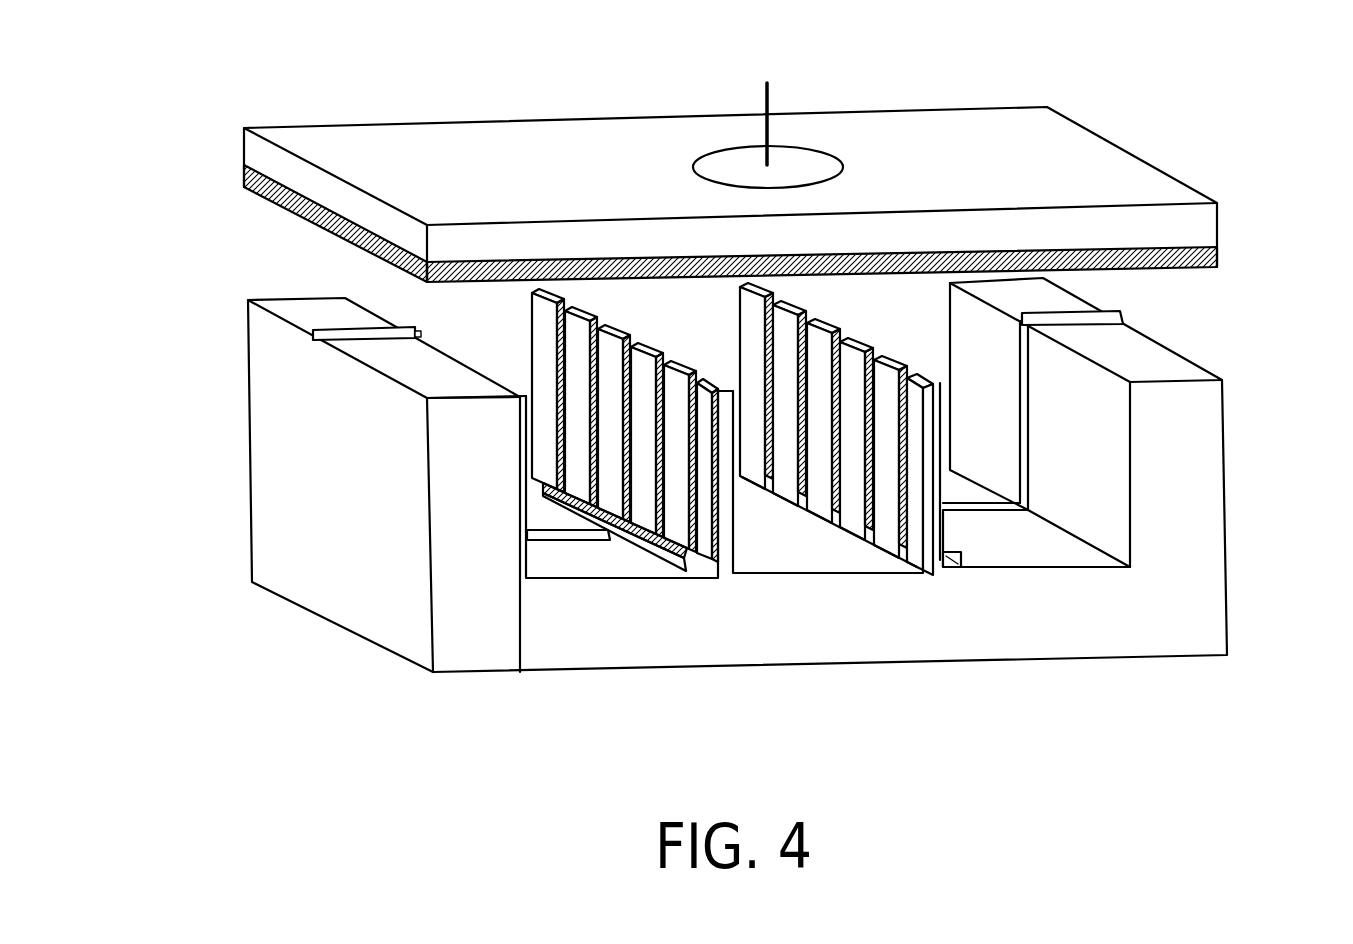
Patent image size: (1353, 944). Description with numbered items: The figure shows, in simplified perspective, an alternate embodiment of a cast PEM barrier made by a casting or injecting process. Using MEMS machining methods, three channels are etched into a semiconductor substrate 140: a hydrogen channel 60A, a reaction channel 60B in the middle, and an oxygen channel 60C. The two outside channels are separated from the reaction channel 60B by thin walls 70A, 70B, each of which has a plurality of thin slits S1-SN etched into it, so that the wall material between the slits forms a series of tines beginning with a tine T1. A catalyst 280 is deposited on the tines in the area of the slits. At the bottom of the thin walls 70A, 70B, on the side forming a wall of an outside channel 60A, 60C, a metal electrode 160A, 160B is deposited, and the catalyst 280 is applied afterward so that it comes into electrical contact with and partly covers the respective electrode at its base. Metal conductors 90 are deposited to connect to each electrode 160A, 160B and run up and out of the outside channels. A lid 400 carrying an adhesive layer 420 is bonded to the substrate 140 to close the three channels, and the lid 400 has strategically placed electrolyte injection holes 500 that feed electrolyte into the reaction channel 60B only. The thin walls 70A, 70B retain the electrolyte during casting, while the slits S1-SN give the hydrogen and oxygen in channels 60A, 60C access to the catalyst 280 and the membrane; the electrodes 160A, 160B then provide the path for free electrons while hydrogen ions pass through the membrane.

The lid 400 is at (793, 174).
The adhesive layer 420 is at (1217, 258).
The electrolyte injection ports or holes 500 is at (772, 90).
The metal conductors 90 is at (345, 340).
The catalyst 280 is at (607, 327).
The tine T1 is at (678, 528).
The thin slits S1-SN is at (702, 480).
The metal electrode 160A is at (574, 503).
The metal electrode 160B is at (933, 515).
The hydrogen channel 60A is at (603, 563).
The reaction channel 60B is at (780, 563).
The oxygen channel 60C is at (1060, 558).
The thin wall 70A is at (726, 537).
The thin wall 70B is at (963, 567).
The semiconductor substrate 140 is at (1172, 620).